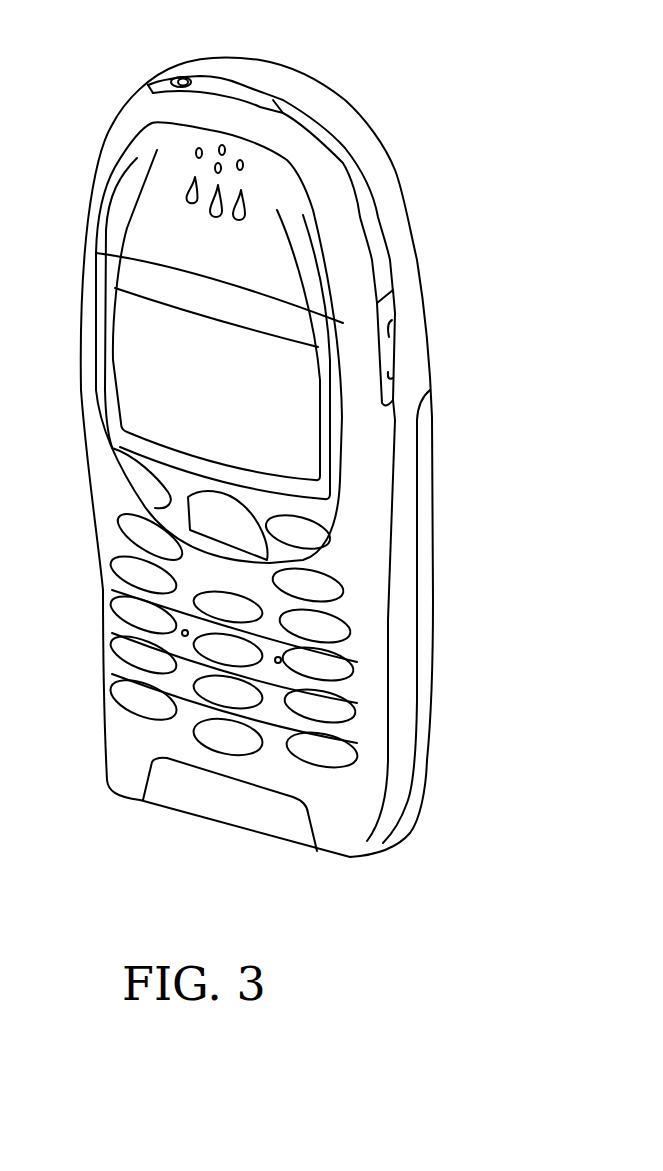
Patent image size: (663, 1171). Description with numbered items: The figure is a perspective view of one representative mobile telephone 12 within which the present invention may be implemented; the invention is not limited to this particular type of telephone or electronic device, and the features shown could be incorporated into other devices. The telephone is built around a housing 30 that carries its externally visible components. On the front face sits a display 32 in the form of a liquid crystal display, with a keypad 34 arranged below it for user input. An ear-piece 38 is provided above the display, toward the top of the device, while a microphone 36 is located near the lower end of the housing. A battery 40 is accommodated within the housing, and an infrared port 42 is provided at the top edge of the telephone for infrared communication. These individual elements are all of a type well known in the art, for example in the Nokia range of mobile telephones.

The mobile telephone 12 is at (377, 66).
The housing 30 is at (403, 220).
The display 32 is at (297, 428).
The keypad 34 is at (317, 757).
The microphone 36 is at (168, 793).
The ear-piece 38 is at (193, 175).
The battery 40 is at (422, 740).
The infrared port 42 is at (240, 90).